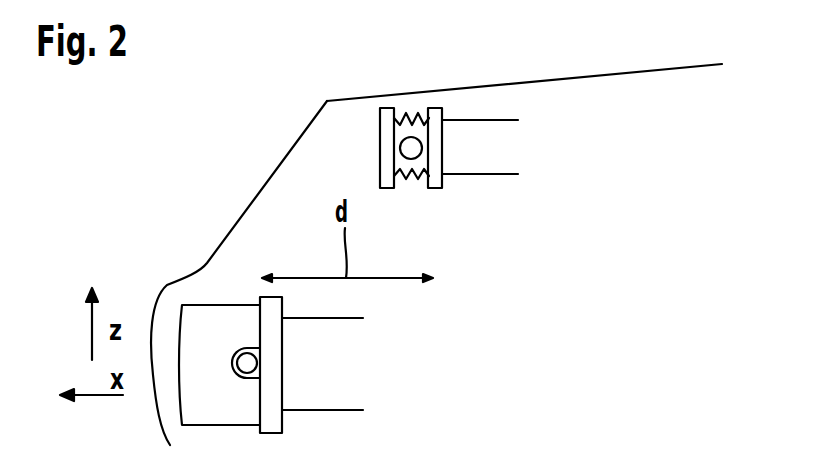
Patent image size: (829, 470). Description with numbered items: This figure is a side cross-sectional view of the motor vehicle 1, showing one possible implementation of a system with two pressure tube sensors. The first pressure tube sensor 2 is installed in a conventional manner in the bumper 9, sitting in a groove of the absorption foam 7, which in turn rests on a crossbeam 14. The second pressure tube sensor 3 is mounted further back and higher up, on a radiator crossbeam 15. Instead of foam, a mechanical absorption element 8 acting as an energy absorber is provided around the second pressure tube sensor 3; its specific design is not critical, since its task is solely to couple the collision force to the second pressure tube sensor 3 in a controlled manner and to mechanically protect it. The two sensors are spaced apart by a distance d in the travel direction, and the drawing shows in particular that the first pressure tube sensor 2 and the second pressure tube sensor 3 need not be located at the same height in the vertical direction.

The motor vehicle 1 is at (635, 73).
The bumper 9 is at (153, 310).
The radiator crossbeam 15 is at (434, 147).
The absorption element 8 is at (414, 179).
The second pressure tube sensor 3 is at (411, 137).
The absorption foam 7 is at (240, 400).
The crossbeam 14 is at (270, 370).
The first pressure tube sensor 2 is at (258, 353).